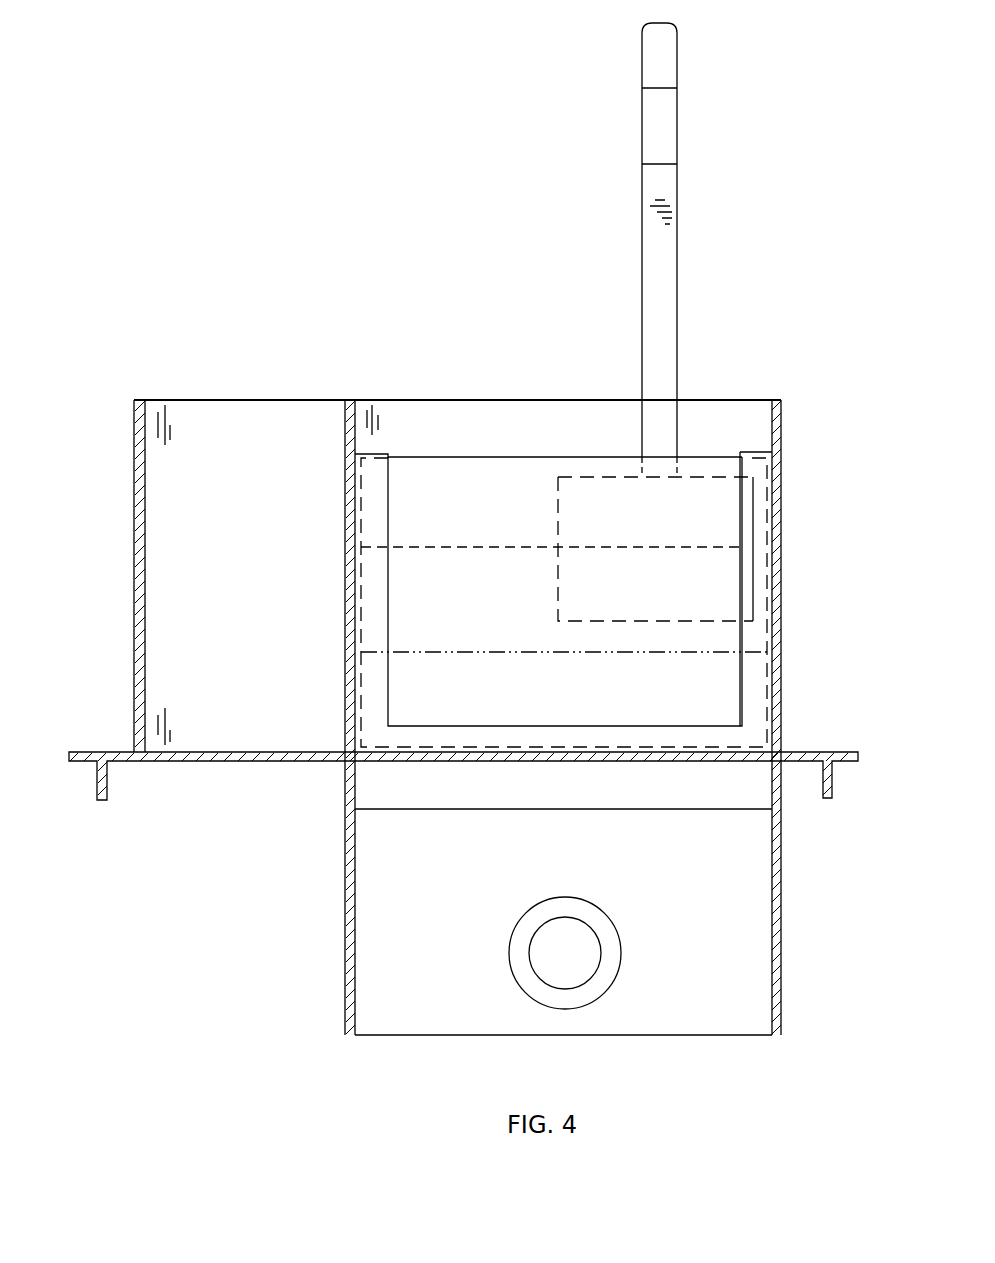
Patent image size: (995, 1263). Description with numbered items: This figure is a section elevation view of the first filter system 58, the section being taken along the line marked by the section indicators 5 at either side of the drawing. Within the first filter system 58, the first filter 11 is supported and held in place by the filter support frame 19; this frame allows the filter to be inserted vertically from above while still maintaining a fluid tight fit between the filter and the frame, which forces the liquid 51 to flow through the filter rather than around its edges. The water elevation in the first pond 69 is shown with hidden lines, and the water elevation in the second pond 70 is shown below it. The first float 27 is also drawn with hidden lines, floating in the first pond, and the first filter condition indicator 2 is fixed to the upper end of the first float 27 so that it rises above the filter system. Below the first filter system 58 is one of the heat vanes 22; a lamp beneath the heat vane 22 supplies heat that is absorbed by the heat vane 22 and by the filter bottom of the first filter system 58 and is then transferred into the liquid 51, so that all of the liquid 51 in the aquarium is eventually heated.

The first filter condition indicator 2 is at (677, 226).
The section line 5- 5 is at (115, 330).
The first filter 11 is at (518, 400).
The filter support frame 19 is at (388, 490).
The heat vane 22 is at (720, 809).
The first float 27 is at (710, 477).
The liquid 51 is at (700, 703).
The first filter system 58 is at (781, 477).
The water elevation in the first pond 69 is at (688, 546).
The water elevation in the second pond 70 is at (680, 646).